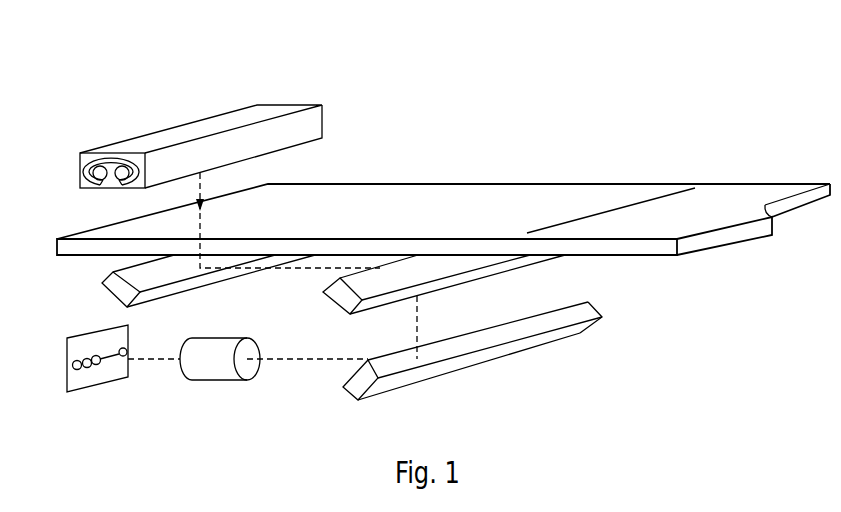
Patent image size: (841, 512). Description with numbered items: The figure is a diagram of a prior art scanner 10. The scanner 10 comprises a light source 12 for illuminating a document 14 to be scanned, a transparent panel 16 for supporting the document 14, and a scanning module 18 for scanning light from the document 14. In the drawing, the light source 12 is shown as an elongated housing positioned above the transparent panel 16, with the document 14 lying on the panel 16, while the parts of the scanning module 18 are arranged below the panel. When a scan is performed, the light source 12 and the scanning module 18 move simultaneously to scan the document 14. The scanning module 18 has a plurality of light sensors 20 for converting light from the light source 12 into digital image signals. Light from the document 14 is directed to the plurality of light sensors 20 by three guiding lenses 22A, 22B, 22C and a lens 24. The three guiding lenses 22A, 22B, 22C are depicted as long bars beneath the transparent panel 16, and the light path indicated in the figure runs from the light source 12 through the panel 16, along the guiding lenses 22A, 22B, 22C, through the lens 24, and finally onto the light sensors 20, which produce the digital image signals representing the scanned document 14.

The scanner 10 is at (577, 90).
The light source 12 is at (293, 103).
The document 14 is at (692, 196).
The transparent panel 16 is at (403, 197).
The scanning module 18 is at (55, 313).
The light sensors 20 is at (93, 373).
The guiding lens 22A is at (116, 298).
The guiding lens 22B is at (500, 275).
The guiding lens 22C is at (466, 362).
The lens 24 is at (210, 375).